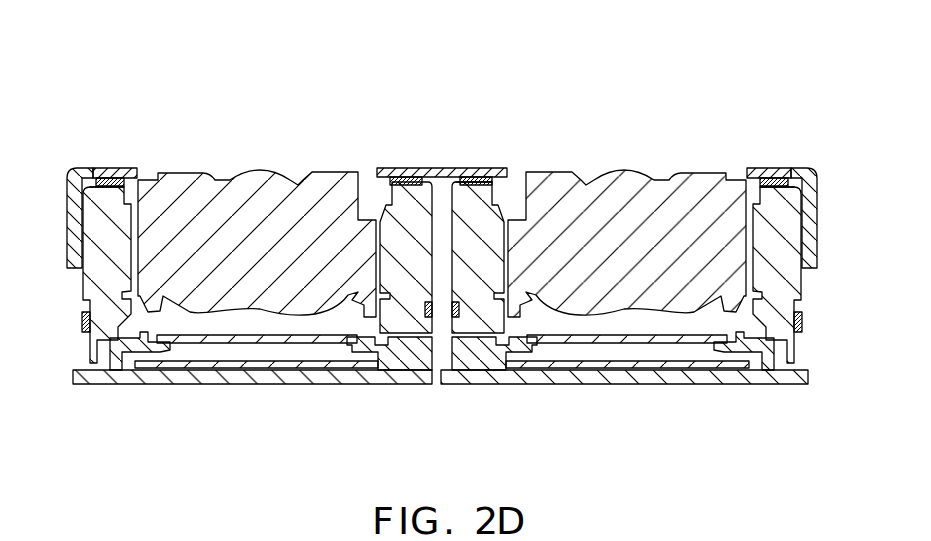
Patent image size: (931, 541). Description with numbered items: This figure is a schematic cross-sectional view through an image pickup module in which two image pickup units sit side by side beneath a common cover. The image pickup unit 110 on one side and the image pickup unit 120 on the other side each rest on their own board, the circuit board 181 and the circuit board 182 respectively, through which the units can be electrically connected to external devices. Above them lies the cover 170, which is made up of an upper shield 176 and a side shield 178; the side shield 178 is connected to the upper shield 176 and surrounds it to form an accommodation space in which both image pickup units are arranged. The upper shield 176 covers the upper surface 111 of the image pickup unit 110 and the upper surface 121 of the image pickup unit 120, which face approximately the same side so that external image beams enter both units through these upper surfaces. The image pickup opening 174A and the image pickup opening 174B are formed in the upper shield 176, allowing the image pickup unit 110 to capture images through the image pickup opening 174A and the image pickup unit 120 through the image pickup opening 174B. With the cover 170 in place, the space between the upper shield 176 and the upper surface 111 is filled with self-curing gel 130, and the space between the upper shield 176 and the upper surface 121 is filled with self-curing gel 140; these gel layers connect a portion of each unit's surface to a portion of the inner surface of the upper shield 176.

The image pickup unit 110 is at (260, 134).
The upper surface 111 is at (108, 186).
The image pickup unit 120 is at (625, 134).
The upper surface 121 is at (467, 184).
The self-curing gel 130 is at (163, 182).
The self-curing gel 140 is at (470, 183).
The cover 170 is at (40, 72).
The image pickup opening 174A is at (138, 175).
The image pickup opening 174B is at (506, 174).
The upper shield 176 is at (106, 186).
The side shield 178 is at (73, 203).
The circuit board 181 is at (228, 385).
The circuit board 182 is at (677, 385).